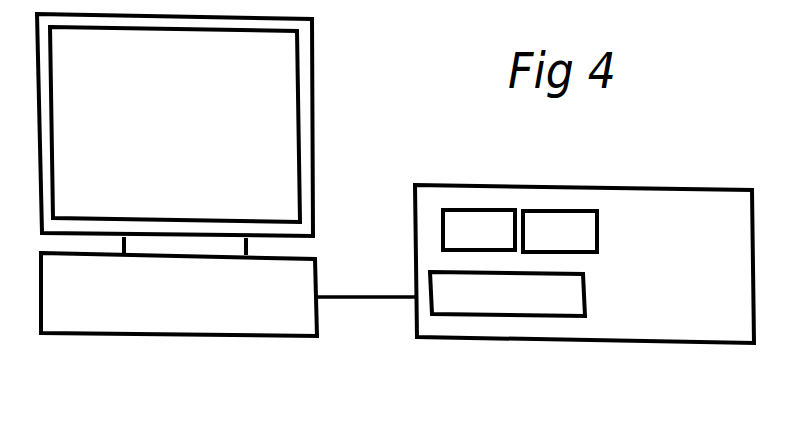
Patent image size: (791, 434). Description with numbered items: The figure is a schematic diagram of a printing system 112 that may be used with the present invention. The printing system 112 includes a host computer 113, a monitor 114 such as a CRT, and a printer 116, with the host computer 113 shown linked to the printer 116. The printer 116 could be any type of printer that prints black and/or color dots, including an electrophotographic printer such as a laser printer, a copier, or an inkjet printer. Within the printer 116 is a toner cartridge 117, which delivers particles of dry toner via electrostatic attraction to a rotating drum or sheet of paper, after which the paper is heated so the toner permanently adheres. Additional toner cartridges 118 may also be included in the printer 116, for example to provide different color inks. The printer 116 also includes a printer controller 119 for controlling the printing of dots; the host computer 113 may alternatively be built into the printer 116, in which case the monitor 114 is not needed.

The printing system 112 is at (416, 85).
The host computer 113 is at (315, 283).
The monitor 114 is at (309, 120).
The printer 116 is at (669, 187).
The toner cartridge 117 is at (580, 206).
The additional toner cartridges 118 is at (470, 206).
The printer controller 119 is at (470, 315).